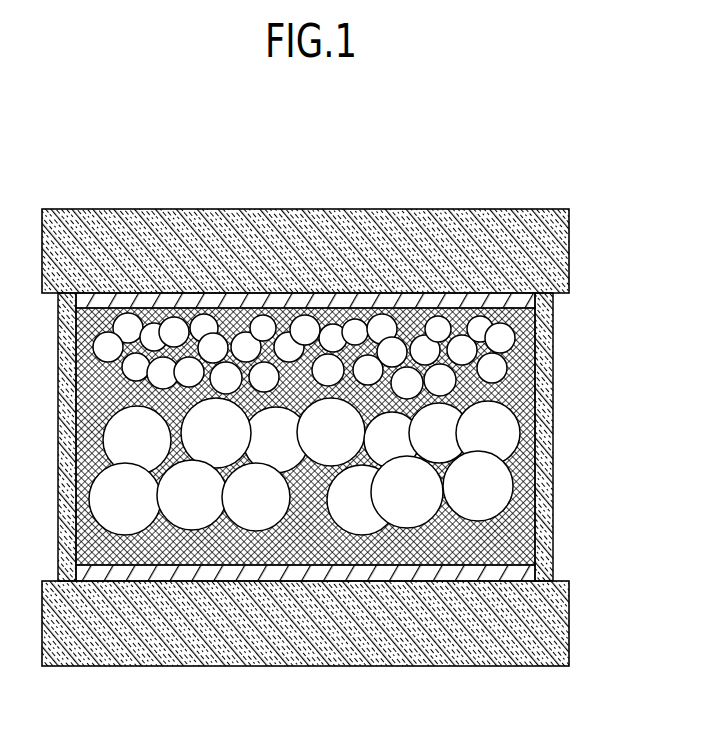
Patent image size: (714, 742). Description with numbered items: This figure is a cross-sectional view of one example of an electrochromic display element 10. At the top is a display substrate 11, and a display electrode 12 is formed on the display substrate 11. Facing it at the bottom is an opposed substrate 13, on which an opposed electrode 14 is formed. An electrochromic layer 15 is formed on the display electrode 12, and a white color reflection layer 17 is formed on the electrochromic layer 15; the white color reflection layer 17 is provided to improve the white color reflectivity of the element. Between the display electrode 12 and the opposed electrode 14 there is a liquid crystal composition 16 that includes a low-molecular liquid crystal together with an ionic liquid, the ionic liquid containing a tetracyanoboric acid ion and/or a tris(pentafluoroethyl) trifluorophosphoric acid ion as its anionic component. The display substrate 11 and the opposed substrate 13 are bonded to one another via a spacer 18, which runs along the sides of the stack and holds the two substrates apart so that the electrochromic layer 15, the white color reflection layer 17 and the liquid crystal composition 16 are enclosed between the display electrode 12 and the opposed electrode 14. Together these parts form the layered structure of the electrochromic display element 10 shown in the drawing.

The electrochromic display element 10 is at (632, 186).
The display substrate 11 is at (557, 250).
The display electrode 12 is at (517, 291).
The opposed substrate 13 is at (558, 622).
The opposed electrode 14 is at (517, 580).
The electrochromic layer 15 is at (510, 343).
The liquid crystal composition 16 is at (523, 470).
The white color reflection layer 17 is at (480, 505).
The spacer 18 is at (540, 433).